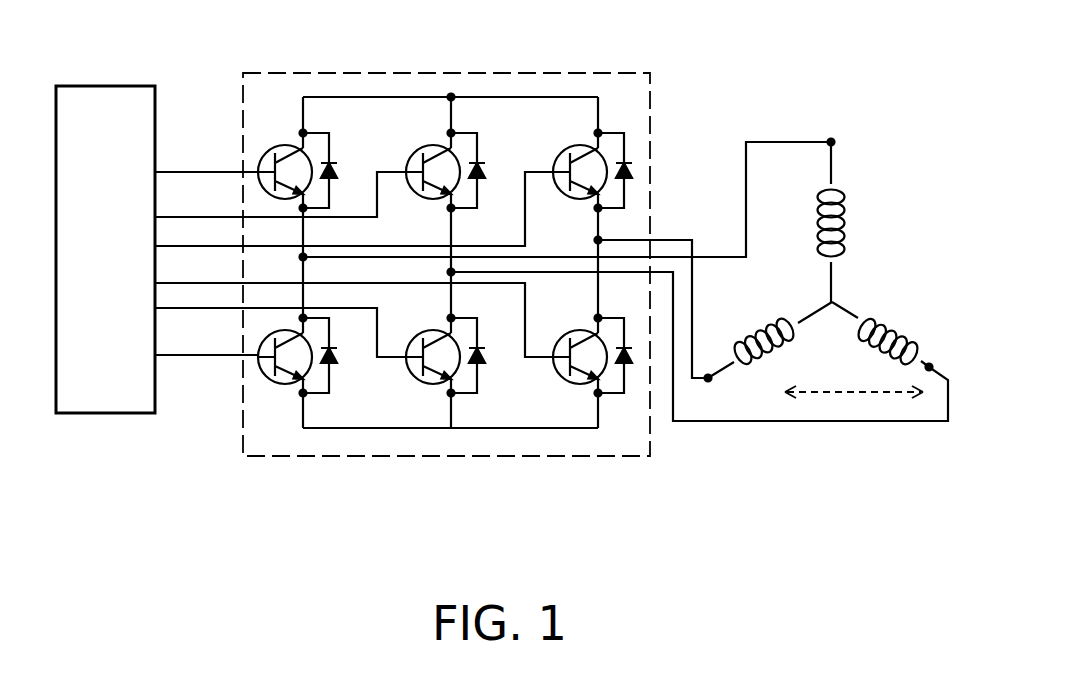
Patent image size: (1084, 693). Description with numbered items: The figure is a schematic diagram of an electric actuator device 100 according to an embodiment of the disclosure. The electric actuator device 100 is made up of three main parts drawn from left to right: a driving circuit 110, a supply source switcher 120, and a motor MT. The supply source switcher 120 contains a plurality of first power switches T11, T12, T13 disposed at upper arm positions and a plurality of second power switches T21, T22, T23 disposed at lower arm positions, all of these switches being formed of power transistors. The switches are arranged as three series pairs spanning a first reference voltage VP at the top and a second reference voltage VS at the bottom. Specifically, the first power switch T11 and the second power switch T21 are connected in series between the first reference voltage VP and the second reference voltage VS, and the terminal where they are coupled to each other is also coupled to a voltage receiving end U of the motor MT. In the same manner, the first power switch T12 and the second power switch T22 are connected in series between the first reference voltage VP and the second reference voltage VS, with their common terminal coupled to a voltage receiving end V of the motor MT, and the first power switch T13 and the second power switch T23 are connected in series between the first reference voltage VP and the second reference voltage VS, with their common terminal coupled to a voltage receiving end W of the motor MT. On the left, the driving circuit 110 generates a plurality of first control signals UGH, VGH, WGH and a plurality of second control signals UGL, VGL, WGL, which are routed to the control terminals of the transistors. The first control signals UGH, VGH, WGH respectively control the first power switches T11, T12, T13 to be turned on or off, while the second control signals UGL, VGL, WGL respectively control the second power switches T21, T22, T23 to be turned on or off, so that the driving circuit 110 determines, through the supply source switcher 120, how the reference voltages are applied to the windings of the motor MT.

The electric actuator device 100 is at (857, 497).
The driving circuit 110 is at (107, 413).
The supply source switcher 120 is at (578, 73).
The motor MT is at (823, 260).
The first reference voltage VP is at (345, 97).
The second reference voltage VS is at (350, 428).
The first power switch T11 is at (296, 164).
The first power switch T12 is at (443, 164).
The first power switch T13 is at (590, 164).
The second power switch T21 is at (296, 368).
The second power switch T22 is at (443, 368).
The second power switch T23 is at (590, 368).
The voltage receiving end U is at (832, 125).
The voltage receiving end V is at (936, 358).
The voltage receiving end W is at (708, 396).
The first control signal UGH is at (179, 159).
The first control signal VGH is at (179, 203).
The first control signal WGH is at (180, 234).
The second control signal UGL is at (179, 343).
The second control signal VGL is at (179, 297).
The second control signal WGL is at (180, 269).